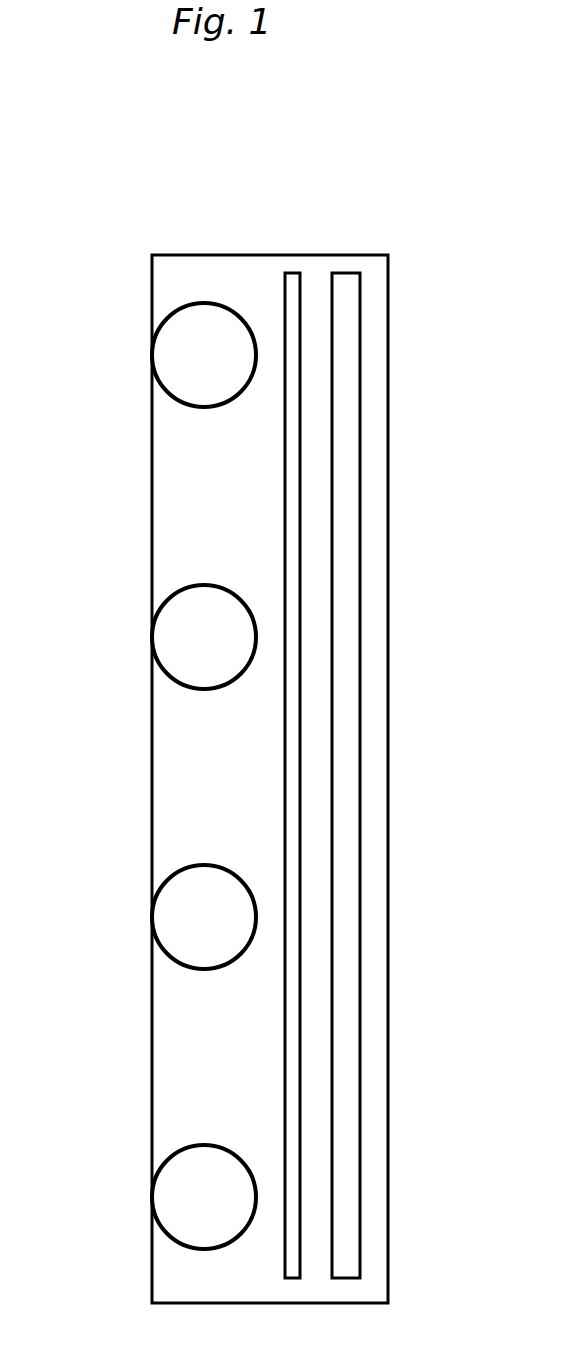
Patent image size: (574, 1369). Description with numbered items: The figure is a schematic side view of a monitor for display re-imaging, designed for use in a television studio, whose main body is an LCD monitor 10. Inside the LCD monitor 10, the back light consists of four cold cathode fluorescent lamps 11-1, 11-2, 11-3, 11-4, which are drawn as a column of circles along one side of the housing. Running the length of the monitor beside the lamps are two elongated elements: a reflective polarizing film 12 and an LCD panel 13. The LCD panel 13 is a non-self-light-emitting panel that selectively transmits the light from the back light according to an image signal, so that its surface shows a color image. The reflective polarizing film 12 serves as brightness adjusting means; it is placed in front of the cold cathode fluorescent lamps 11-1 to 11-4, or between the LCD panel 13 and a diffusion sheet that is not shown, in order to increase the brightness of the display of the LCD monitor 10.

The LCD monitor 10 is at (273, 255).
The cold cathode fluorescent lamp 11-1 is at (178, 312).
The cold cathode fluorescent lamp 11-2 is at (180, 592).
The cold cathode fluorescent lamp 11-3 is at (182, 872).
The cold cathode fluorescent lamp 11-4 is at (182, 1152).
The reflective polarizing film 12 is at (300, 597).
The LCD panel 13 is at (360, 385).